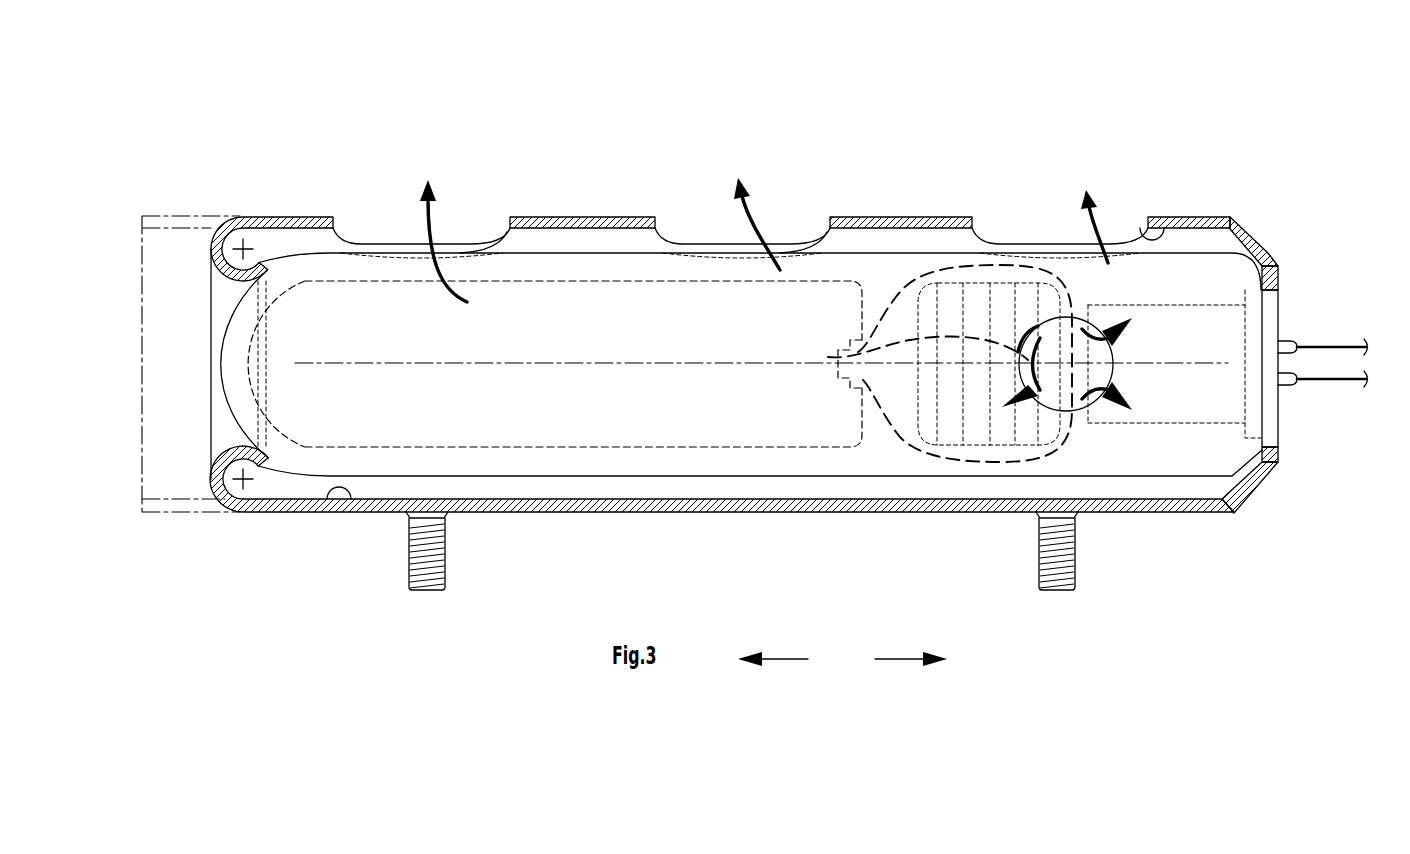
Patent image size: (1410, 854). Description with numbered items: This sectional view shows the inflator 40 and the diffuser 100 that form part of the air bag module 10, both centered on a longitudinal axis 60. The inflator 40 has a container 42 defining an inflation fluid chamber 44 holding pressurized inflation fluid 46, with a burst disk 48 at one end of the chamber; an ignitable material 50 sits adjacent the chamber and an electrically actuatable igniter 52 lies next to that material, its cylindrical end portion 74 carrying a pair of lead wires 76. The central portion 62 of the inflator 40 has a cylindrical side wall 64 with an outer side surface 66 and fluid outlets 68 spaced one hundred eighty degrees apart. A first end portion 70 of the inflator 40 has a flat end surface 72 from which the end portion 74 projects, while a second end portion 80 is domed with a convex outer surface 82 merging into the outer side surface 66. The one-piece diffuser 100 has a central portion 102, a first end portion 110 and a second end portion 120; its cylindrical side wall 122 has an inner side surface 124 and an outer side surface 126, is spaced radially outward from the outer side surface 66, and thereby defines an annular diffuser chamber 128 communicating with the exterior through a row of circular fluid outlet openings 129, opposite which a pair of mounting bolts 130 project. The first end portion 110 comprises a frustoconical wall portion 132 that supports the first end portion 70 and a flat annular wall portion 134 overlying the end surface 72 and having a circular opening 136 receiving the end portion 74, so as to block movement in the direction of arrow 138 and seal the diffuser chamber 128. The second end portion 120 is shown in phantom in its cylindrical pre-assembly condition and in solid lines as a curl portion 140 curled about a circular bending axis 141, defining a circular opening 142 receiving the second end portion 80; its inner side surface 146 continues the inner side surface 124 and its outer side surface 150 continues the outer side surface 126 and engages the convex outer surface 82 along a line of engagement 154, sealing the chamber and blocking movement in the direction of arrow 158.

The air bag module 10 is at (620, 95).
The inflator 40 is at (600, 484).
The container 42 is at (508, 478).
The inflation fluid chamber 44 is at (550, 340).
The inflation fluid 46 is at (658, 340).
The burst disk 48 is at (842, 346).
The ignitable material 50 is at (958, 440).
The igniter 52 is at (1166, 342).
The longitudinal axis 60 is at (372, 367).
The central portion 62 is at (886, 242).
The side wall 64 is at (620, 252).
The outer side surface 66 is at (563, 252).
The fluid outlets 68 is at (1096, 406).
The first end portion 70 is at (1238, 242).
The end surface 72 is at (1280, 268).
The end portion 74 is at (1280, 312).
The lead wires 76 is at (1335, 350).
The second end portion 80 is at (313, 240).
The convex outer surface 82 is at (227, 397).
The diffuser 100 is at (653, 520).
The central portion 102 is at (727, 520).
The first end portion 110 is at (1270, 225).
The second end portion 120 is at (219, 518).
The side wall 122 is at (928, 208).
The inner side surface 124 is at (1142, 237).
The outer side surface 126 is at (1182, 217).
The diffuser chamber 128 is at (966, 244).
The fluid outlet openings 129 is at (490, 228).
The mounting bolts 130 is at (432, 566).
The frustoconical wall portion 132 is at (1250, 497).
The annular wall portion 134 is at (1273, 455).
The circular opening 136 is at (1277, 428).
The arrow 138 is at (911, 671).
The curl portion 140 is at (205, 236).
The bending axis 141 is at (245, 477).
The circular opening 142 is at (227, 297).
The inner side surface 146 is at (233, 216).
The outer side surface 150 is at (232, 456).
The line of engagement 154 is at (262, 275).
The arrow 158 is at (773, 671).